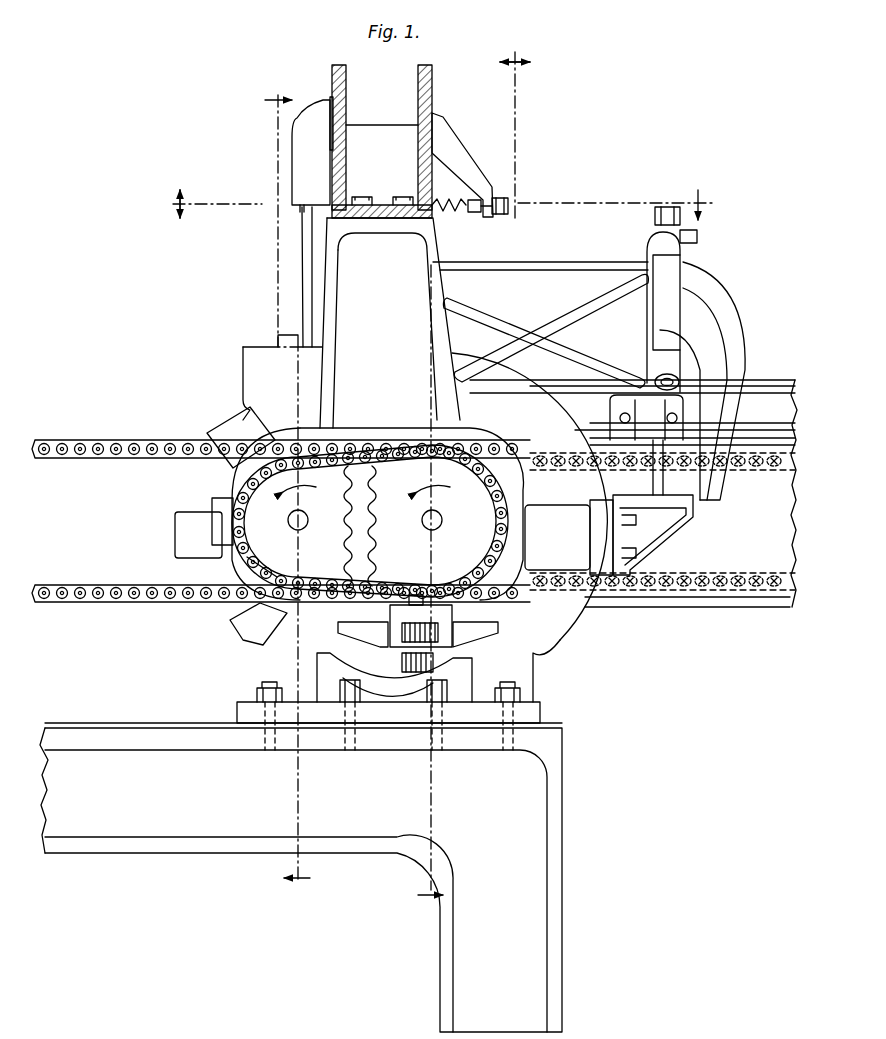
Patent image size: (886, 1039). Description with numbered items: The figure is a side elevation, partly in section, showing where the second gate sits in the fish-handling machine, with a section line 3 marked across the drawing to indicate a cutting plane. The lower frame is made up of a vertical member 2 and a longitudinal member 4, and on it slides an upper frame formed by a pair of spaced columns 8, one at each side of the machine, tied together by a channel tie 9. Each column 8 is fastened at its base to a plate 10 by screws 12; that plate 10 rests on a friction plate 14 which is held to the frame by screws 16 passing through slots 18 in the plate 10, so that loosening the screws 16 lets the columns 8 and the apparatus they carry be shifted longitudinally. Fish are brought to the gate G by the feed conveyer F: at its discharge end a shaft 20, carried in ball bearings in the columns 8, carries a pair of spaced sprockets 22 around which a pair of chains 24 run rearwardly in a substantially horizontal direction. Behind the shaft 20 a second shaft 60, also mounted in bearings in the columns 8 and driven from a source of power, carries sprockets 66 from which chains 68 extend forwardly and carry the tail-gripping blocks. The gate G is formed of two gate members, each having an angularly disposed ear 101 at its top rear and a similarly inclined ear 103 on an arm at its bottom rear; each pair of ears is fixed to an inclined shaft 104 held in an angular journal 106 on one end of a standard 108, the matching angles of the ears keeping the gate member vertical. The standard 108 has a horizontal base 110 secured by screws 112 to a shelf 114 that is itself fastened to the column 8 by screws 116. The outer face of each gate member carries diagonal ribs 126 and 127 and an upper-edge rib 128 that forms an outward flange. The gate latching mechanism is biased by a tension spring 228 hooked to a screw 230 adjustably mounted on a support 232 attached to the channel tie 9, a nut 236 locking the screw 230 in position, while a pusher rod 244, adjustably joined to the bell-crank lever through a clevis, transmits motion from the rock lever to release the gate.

The vertical member of the frame 2 is at (432, 973).
The section line 3 is at (287, 490).
The longitudinal member of the frame 4 is at (210, 860).
The column 8 is at (437, 252).
The channel tie 9 is at (432, 88).
The plate 10 is at (540, 708).
The screws 12 is at (353, 679).
The friction plate 14 is at (562, 728).
The screws 16 is at (284, 690).
The slots 18 is at (260, 700).
The shaft 20 is at (302, 518).
The sprockets 22 is at (347, 549).
The chains 24 is at (240, 492).
The shaft 60 is at (438, 522).
The sprockets 66 is at (372, 537).
The chains 68 is at (118, 445).
The feed conveyer F is at (178, 532).
The gate G is at (498, 272).
The ear 101 is at (655, 252).
The ear 103 is at (656, 357).
The shaft 104 is at (664, 392).
The journal 106 is at (690, 300).
The standard 108 is at (738, 338).
The base 110 is at (693, 500).
The screws 112 is at (687, 520).
The shelf 114 is at (680, 537).
The screws 116 is at (647, 536).
The rib 126 is at (476, 318).
The rib 127 is at (536, 296).
The rib 128 is at (575, 268).
The tension spring 228 is at (450, 193).
The screw 230 is at (478, 212).
The support 232 is at (460, 150).
The nut 236 is at (509, 200).
The pusher rod 244 is at (305, 260).